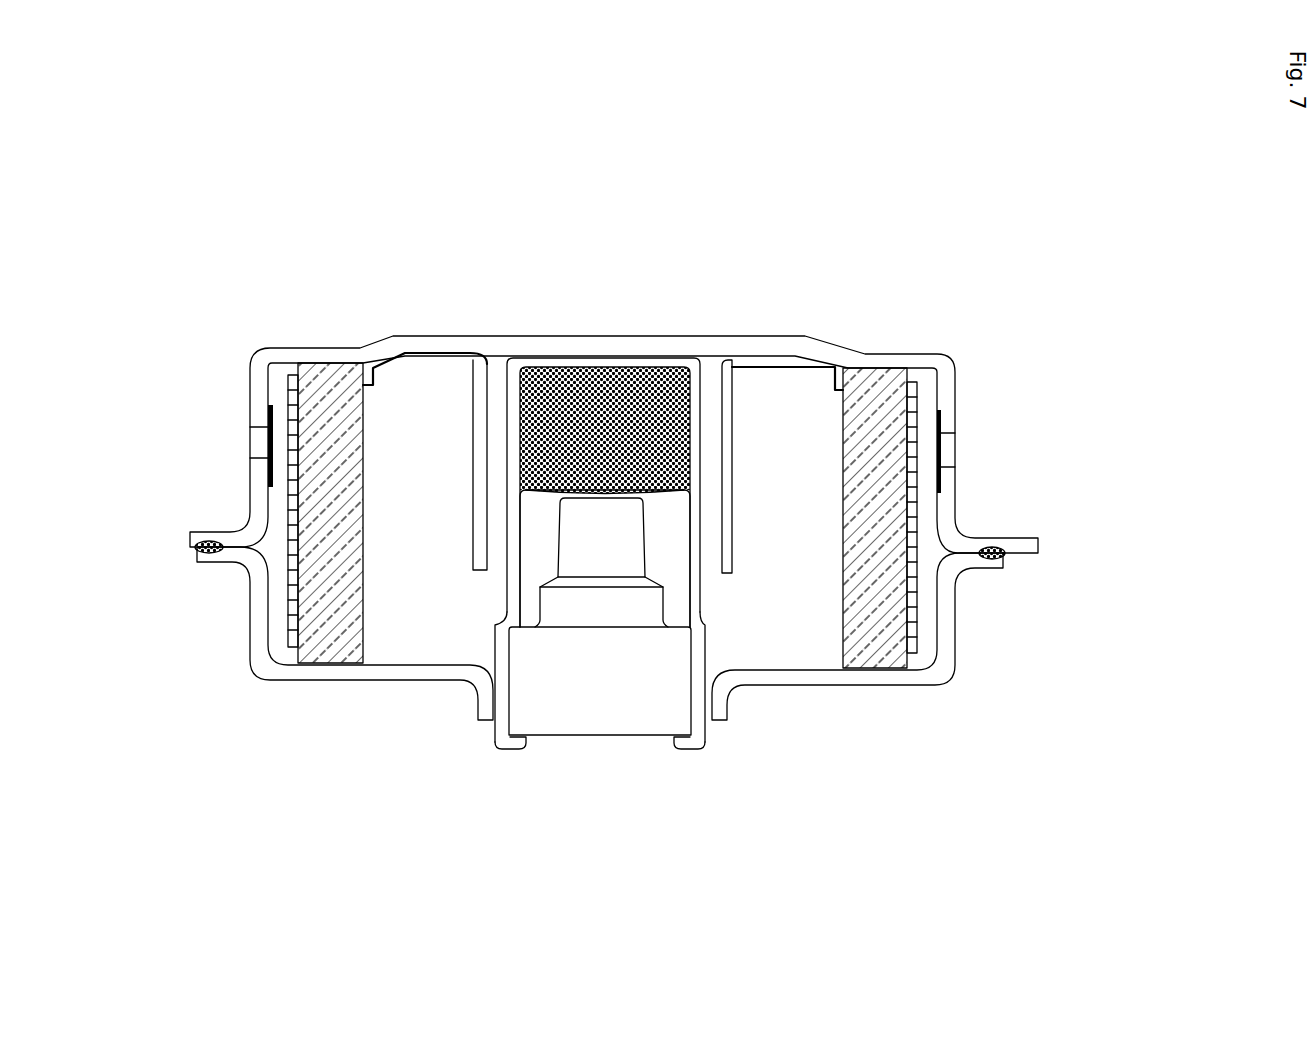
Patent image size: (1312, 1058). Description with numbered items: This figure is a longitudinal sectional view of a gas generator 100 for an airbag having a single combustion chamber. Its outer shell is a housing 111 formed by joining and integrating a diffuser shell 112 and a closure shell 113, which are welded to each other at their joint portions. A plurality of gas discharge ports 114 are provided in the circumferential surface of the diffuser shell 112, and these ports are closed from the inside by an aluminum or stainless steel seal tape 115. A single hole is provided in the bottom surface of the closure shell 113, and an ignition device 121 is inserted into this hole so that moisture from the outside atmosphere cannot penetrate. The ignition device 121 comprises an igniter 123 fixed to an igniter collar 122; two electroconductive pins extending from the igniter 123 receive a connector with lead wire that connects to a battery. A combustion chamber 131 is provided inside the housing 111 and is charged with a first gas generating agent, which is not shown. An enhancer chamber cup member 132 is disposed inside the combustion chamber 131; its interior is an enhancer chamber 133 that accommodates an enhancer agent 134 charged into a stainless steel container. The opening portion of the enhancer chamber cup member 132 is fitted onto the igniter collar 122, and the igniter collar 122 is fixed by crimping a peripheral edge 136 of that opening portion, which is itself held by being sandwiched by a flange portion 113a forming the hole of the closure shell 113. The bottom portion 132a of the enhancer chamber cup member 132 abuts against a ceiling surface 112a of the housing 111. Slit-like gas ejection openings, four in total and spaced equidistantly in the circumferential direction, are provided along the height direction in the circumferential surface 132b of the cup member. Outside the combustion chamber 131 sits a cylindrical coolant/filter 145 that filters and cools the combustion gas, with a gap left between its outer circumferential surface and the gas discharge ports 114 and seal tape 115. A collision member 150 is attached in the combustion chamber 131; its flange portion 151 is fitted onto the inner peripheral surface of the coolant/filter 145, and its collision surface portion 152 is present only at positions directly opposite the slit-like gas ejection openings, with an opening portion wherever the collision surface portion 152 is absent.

The gas generator 100 is at (603, 287).
The housing 111 is at (1115, 500).
The diffuser shell 112 is at (948, 502).
The ceiling surface 112a is at (434, 368).
The closure shell 113 is at (947, 600).
The flange portion 113a is at (714, 714).
The gas discharge ports 114 is at (955, 440).
The seal tape 115 is at (276, 408).
The ignition device 121 is at (585, 740).
The igniter collar 122 is at (578, 686).
The igniter 123 is at (584, 546).
The combustion chamber 131 is at (405, 440).
The enhancer chamber cup member 132 is at (688, 407).
The bottom portion 132a is at (637, 360).
The circumferential surface 132b is at (507, 593).
The enhancer chamber 133 is at (660, 543).
The enhancer agent 134 is at (570, 385).
The peripheral edge 136 is at (508, 748).
The coolant/filter 145 is at (320, 605).
The collision member 150 is at (728, 382).
The flange portion 151 is at (797, 366).
The collision surface portion 152 is at (727, 495).